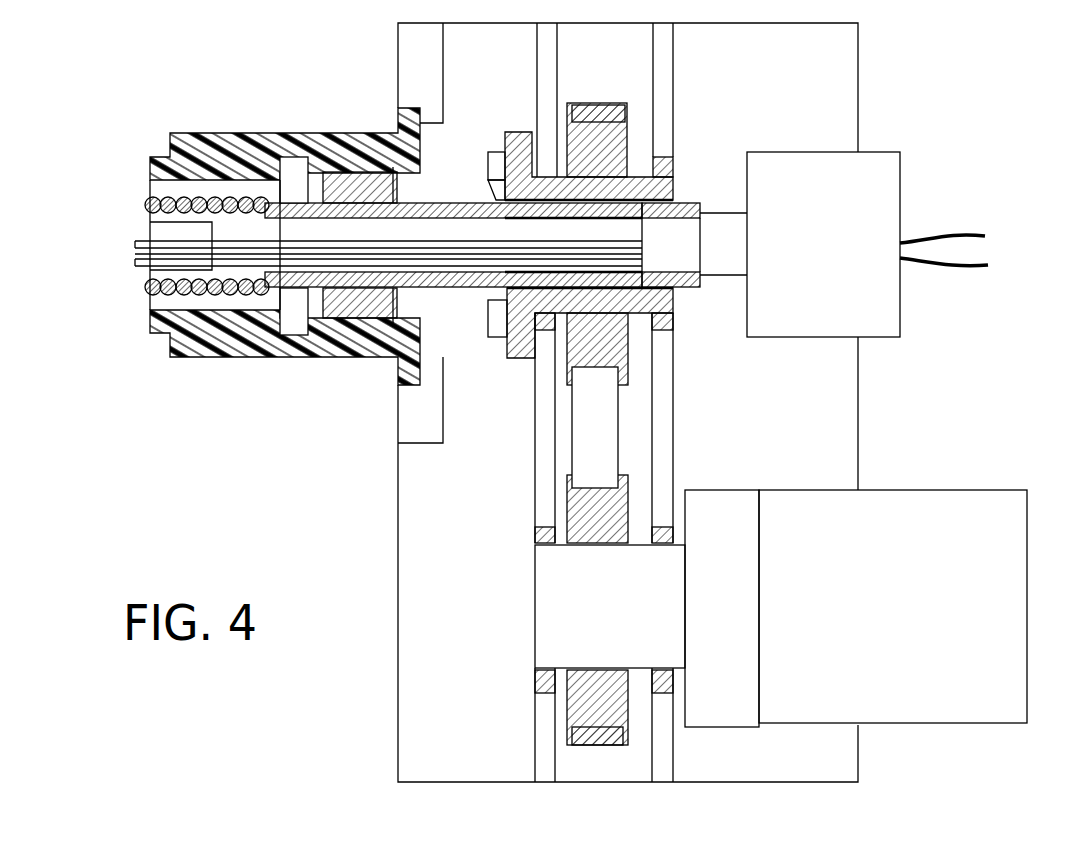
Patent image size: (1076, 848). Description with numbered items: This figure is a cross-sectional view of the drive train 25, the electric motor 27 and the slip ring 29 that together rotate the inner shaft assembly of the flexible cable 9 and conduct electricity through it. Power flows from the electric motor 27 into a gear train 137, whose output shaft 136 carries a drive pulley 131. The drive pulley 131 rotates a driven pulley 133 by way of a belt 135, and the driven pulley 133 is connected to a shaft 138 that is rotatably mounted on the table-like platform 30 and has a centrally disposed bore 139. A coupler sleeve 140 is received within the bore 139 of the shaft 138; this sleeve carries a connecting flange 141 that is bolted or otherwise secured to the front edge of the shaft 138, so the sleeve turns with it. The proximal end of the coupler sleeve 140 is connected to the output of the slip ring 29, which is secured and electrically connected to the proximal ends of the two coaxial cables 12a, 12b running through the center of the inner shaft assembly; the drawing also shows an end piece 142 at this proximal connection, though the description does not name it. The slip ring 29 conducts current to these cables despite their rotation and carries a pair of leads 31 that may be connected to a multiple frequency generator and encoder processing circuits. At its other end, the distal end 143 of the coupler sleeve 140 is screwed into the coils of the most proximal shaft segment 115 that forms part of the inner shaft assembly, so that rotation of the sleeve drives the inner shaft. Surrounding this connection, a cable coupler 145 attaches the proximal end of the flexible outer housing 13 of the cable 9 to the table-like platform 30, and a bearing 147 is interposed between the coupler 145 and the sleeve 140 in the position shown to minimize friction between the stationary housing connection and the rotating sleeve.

The flexible cable 9 is at (128, 159).
The flexible outer housing 13 is at (156, 157).
The shaft segment 115 is at (162, 200).
The coaxial cable 12a is at (150, 232).
The coaxial cable 12b is at (150, 270).
The distal end of coupler sleeve 143 is at (236, 215).
The cable coupler 145 is at (360, 145).
The bearing 147 is at (345, 300).
The coupler sleeve 140 is at (462, 205).
The connecting flange 141 is at (498, 172).
The shaft 138 is at (592, 185).
The belt 135 is at (605, 105).
The bore 139 is at (678, 197).
The coupling sleeve 142 is at (700, 205).
The table-like platform 30 is at (858, 60).
The slip ring 29 is at (875, 152).
The leads 31 is at (985, 236).
The driven pulley 133 is at (603, 340).
The drive train 25 is at (695, 427).
The gear train 137 is at (703, 490).
The electric motor 27 is at (917, 490).
The output shaft 136 is at (590, 615).
The drive pulley 131 is at (590, 705).